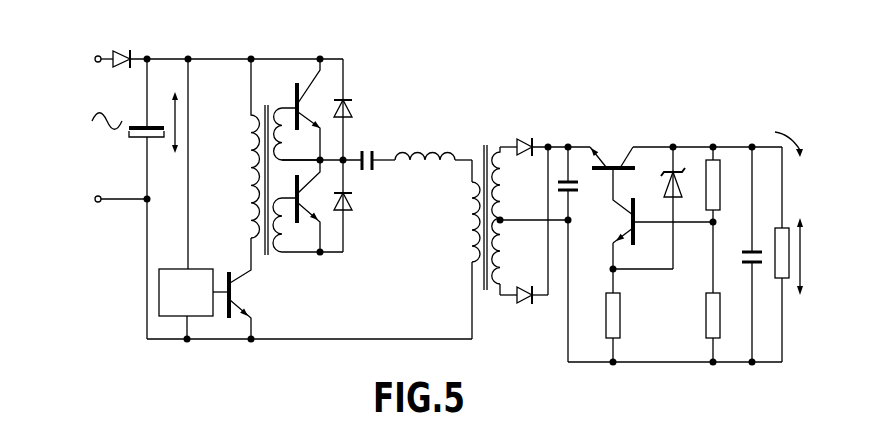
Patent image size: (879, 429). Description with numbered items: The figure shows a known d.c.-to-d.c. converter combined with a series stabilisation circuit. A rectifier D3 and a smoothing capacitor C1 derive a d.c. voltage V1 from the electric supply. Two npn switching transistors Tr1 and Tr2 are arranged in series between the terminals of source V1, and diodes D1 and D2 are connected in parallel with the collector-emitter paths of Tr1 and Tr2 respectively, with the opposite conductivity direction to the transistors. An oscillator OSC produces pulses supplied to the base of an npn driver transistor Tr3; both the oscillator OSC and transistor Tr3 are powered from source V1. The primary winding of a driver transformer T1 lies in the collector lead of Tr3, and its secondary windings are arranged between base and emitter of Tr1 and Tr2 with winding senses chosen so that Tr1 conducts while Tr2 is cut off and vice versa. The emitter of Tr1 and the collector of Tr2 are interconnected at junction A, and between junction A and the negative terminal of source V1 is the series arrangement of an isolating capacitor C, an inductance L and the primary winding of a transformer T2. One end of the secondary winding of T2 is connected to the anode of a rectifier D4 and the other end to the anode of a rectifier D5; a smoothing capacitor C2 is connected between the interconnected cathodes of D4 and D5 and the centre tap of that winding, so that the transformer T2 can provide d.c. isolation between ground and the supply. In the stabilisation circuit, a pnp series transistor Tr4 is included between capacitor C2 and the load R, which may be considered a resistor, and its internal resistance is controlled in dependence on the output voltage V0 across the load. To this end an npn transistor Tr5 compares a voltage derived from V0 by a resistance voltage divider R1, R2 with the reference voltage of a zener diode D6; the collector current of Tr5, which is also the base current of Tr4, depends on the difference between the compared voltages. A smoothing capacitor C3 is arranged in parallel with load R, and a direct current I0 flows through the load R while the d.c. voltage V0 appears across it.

The rectifier D3 is at (127, 45).
The smoothing capacitor C1 is at (147, 137).
The d.c. voltage source V1 is at (166, 121).
The oscillator OSC is at (195, 284).
The driver transistor Tr3 is at (232, 292).
The driver transformer T1 is at (265, 118).
The switching transistor Tr1 is at (300, 107).
The switching transistor Tr2 is at (300, 200).
The diode D1 is at (347, 103).
The diode D2 is at (349, 200).
The junction A is at (344, 164).
The isolating capacitor C is at (375, 172).
The inductance L is at (432, 155).
The transformer T2 is at (488, 278).
The rectifier D4 is at (520, 142).
The rectifier D5 is at (523, 305).
The smoothing capacitor C2 is at (571, 193).
The series transistor Tr4 is at (612, 165).
The npn transistor Tr5 is at (628, 225).
The zener diode D6 is at (670, 188).
The resistance voltage divider resistor R1 is at (724, 184).
The resistance voltage divider resistor R2 is at (724, 312).
The smoothing capacitor C3 is at (747, 260).
The load R is at (778, 254).
The direct current I0 is at (789, 130).
The d.c. voltage V0 is at (811, 256).